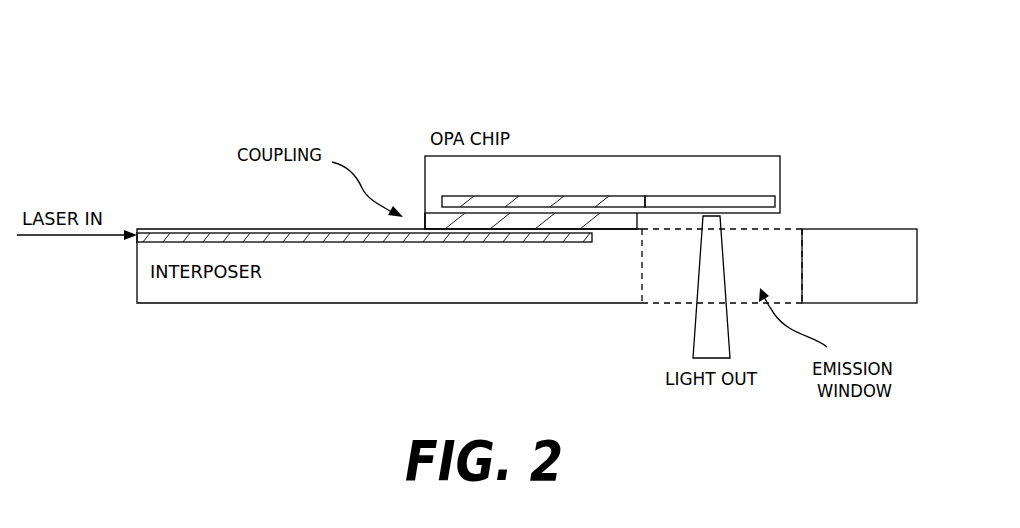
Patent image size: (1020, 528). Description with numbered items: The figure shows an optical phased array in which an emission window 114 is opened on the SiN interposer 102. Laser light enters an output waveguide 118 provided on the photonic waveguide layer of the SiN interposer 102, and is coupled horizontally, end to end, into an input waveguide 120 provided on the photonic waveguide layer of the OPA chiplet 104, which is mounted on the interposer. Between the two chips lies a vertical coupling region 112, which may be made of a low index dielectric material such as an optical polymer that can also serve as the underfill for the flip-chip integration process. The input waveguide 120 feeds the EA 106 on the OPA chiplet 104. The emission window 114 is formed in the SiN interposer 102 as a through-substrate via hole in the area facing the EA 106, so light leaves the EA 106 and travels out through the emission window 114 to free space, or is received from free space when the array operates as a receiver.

The SiN interposer 102 is at (455, 272).
The OPA chiplet 104 is at (588, 167).
The emitter array (EA) 106 is at (783, 203).
The vertical coupling region 112 is at (423, 218).
The emission window 114 is at (788, 248).
The output waveguide (SiN waveguide) 118 is at (225, 228).
The input waveguide (SiPh waveguide) 120 is at (627, 197).